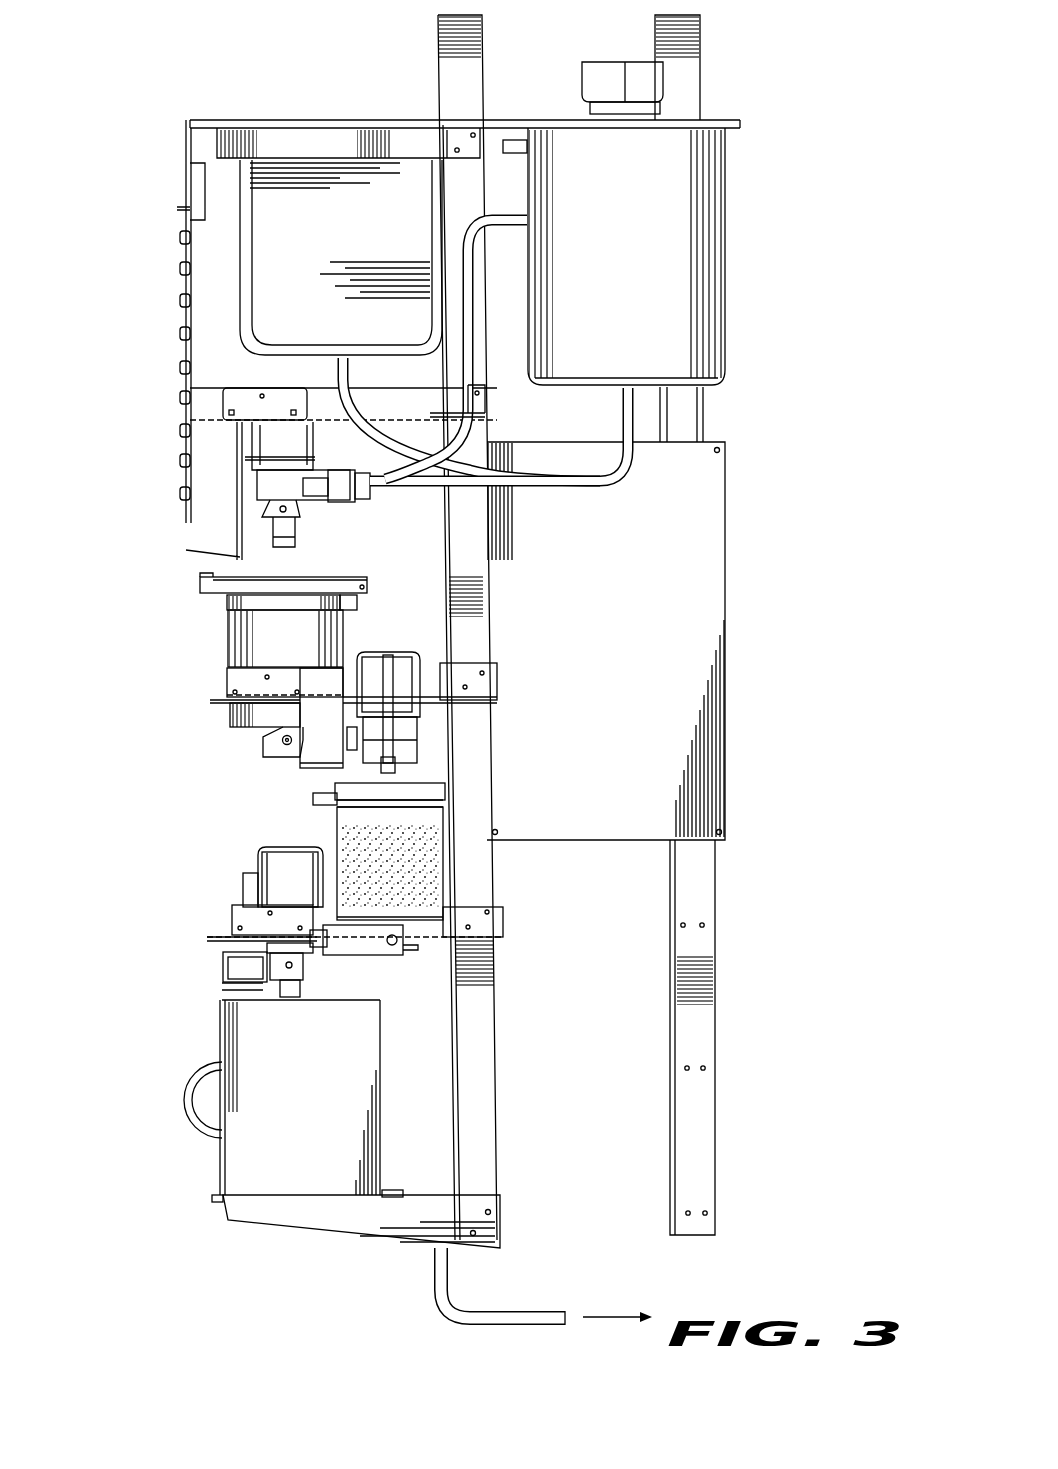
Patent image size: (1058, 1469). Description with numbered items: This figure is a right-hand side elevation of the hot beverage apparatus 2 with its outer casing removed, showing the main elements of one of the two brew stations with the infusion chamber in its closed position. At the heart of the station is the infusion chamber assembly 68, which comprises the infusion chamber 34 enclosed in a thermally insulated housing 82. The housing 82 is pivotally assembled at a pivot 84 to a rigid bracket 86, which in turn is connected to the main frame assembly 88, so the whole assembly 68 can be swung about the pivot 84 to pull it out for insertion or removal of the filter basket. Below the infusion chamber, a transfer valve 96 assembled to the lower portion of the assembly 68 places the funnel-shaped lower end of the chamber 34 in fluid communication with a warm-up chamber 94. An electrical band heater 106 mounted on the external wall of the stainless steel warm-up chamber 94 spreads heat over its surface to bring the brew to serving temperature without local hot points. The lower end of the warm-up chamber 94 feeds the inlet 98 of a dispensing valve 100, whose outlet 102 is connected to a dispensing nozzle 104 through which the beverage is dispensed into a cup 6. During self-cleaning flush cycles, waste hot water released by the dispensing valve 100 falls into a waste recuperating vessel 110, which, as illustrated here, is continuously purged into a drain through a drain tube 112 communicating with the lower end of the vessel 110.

The apparatus 2 is at (133, 372).
The cup 6 is at (193, 1117).
The infusion chamber 34 is at (268, 580).
The infusion chamber assembly 68 is at (228, 622).
The thermally insulated housing 82 is at (278, 648).
The pivot 84 is at (270, 737).
The rigid bracket 86 is at (460, 682).
The main frame assembly 88 is at (483, 1035).
The warm-up chamber 94 is at (418, 840).
The transfer valve 96 is at (500, 727).
The inlet 98 is at (323, 950).
The dispensing valve 100 is at (293, 880).
The outlet 102 is at (270, 992).
The dispensing nozzle 104 is at (297, 1002).
The electrical band heater 106 is at (443, 907).
The waste recuperating vessel 110 is at (363, 1220).
The drain tube 112 is at (522, 1317).